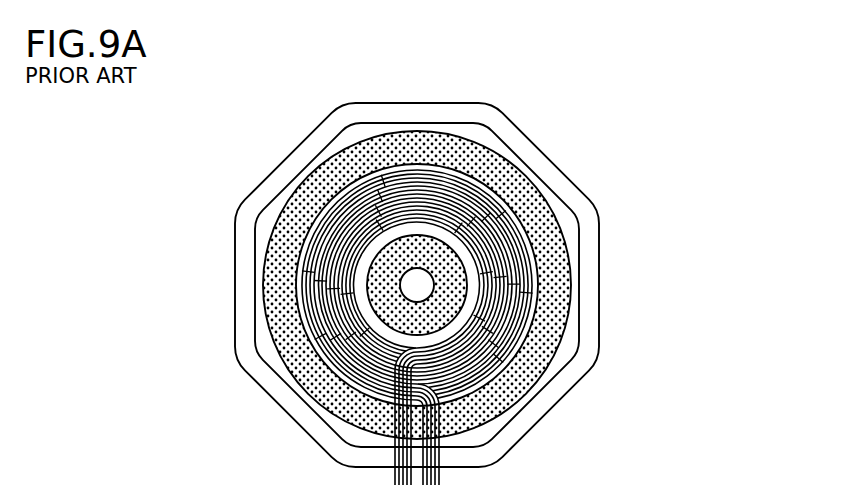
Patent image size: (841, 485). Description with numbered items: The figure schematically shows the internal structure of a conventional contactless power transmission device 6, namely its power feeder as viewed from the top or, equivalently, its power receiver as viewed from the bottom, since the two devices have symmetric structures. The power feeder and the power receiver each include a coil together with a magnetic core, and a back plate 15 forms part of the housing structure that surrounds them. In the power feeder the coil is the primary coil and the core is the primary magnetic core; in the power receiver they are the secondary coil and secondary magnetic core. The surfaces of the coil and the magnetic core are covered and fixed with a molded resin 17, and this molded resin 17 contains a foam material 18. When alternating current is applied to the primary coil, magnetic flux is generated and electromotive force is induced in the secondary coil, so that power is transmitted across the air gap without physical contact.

The contactless power transmission device 6 is at (650, 47).
The back plate 15 is at (540, 413).
The molded resin 17 is at (307, 242).
The foam material 18 is at (445, 305).